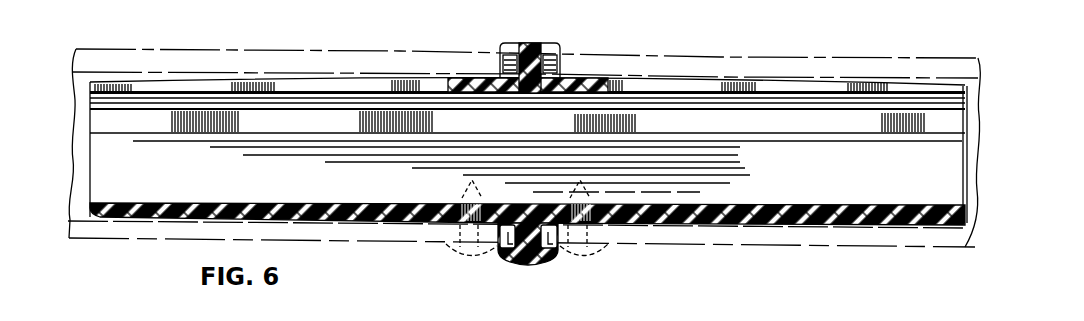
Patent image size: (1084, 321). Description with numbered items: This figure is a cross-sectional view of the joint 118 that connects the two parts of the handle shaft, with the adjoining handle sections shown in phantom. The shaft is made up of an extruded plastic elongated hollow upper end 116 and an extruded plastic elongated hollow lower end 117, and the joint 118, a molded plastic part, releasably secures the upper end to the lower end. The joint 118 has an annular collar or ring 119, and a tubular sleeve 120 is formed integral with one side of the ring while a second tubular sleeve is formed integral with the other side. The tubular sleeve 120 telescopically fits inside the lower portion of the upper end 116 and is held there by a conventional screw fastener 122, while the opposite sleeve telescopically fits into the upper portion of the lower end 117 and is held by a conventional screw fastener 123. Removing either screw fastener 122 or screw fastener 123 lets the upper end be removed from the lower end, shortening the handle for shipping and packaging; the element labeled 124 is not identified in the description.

The upper end 116 is at (133, 59).
The lower end 117 is at (790, 65).
The joint 118 is at (528, 264).
The annular collar 119 is at (528, 50).
The tubular sleeve 120 is at (310, 82).
The screw fastener 122 is at (462, 251).
The screw fastener 123 is at (591, 249).
The bottom layer 124 is at (835, 222).